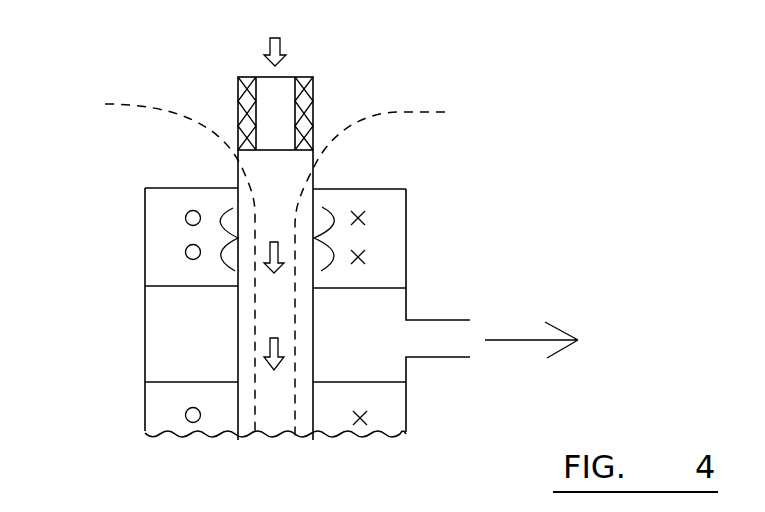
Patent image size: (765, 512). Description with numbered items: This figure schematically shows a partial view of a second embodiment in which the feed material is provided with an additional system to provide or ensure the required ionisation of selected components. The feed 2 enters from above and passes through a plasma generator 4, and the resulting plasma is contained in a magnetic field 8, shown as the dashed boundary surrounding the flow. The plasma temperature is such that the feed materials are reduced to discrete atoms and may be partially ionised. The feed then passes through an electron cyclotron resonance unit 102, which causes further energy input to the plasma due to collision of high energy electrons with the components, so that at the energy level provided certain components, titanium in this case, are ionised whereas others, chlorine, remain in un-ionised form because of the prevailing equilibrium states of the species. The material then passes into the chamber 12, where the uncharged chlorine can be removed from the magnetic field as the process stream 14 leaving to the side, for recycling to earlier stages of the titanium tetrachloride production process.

The feed 2 is at (275, 37).
The plasma generator 4 is at (306, 97).
The magnetic field 8 is at (363, 117).
The chamber 12 is at (182, 337).
The process stream 14 is at (546, 340).
The electron cyclotron resonance unit 102 is at (382, 240).